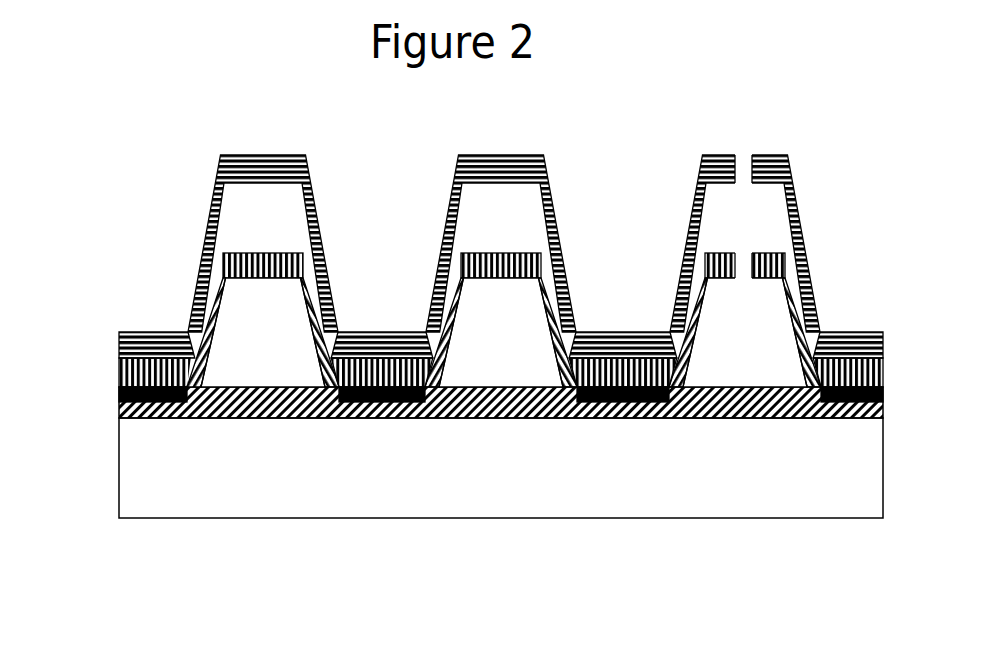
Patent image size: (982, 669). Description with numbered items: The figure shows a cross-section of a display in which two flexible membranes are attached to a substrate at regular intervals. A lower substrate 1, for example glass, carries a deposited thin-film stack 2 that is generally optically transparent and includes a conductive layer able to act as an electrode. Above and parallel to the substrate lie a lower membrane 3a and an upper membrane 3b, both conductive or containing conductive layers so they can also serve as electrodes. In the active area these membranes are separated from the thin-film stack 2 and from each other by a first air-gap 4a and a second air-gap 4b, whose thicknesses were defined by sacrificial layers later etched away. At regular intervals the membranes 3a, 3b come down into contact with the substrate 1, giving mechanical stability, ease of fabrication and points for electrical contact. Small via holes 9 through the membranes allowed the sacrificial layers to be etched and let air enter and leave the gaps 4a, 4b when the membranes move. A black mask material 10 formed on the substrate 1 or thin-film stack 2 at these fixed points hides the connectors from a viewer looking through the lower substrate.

The lower substrate 1 is at (183, 463).
The thin-film stack 2 is at (119, 408).
The lower flexible membrane 3a is at (459, 320).
The upper flexible membrane 3b is at (501, 262).
The first air-gap 4a is at (293, 325).
The second air-gap 4b is at (293, 237).
The via holes 9 is at (743, 170).
The black mask material 10 is at (375, 402).